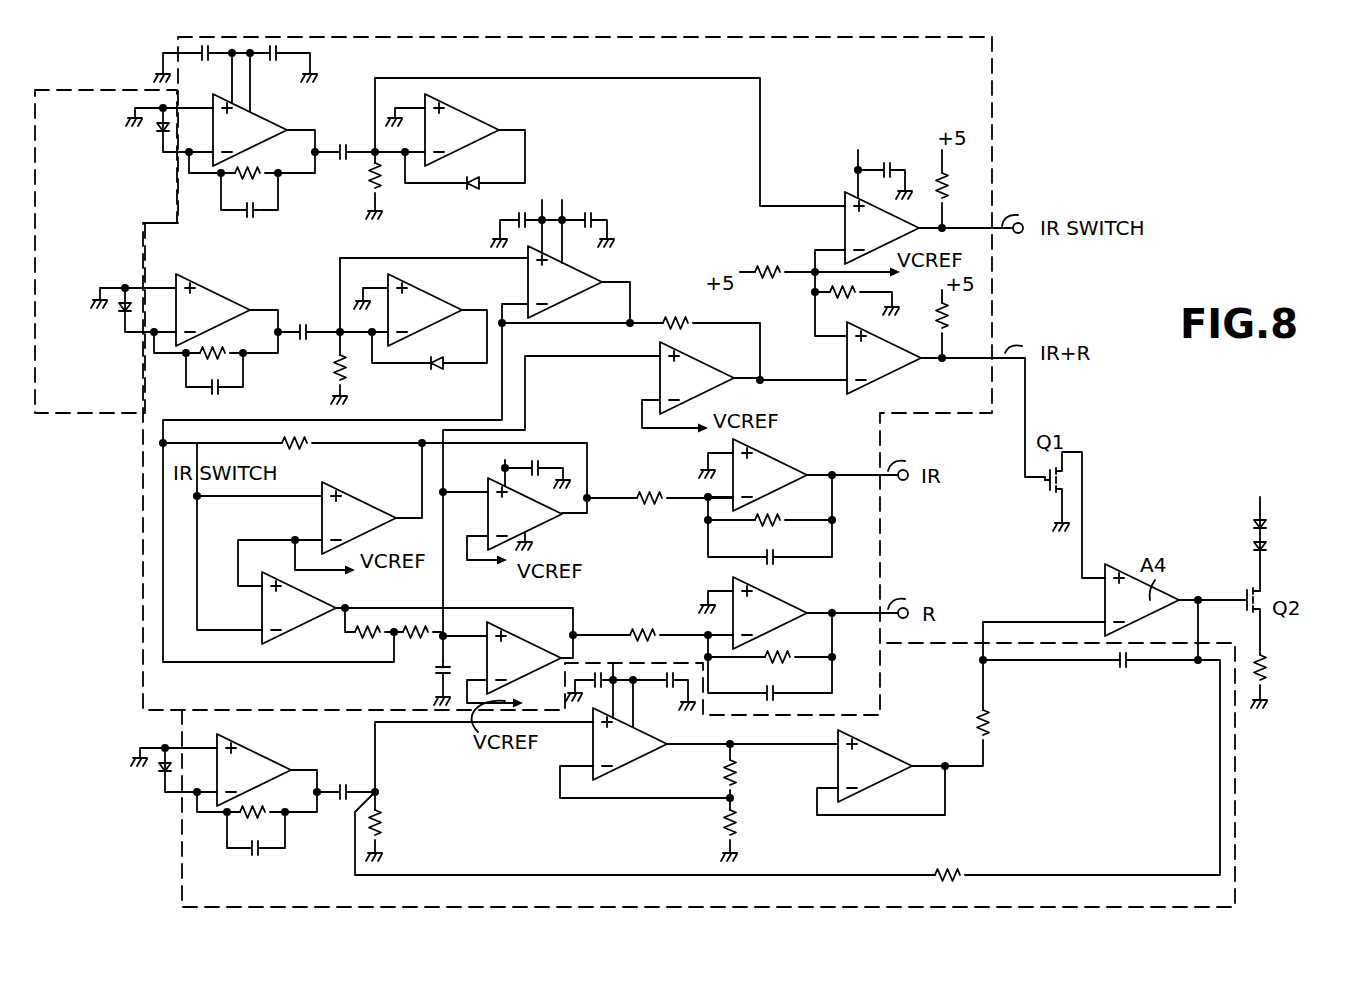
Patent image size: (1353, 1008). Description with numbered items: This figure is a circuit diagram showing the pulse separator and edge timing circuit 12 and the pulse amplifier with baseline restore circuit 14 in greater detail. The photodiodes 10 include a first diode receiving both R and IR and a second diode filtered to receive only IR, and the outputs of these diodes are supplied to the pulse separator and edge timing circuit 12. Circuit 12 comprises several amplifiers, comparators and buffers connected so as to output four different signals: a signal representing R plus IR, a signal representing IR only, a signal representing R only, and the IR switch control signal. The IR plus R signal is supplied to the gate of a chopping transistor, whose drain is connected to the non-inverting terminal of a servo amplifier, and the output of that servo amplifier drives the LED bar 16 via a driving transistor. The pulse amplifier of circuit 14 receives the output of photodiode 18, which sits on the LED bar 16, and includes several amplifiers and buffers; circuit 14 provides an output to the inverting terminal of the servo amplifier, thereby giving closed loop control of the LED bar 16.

The photodiodes 10 is at (87, 60).
The pulse separator and edge timing circuit 12 is at (142, 584).
The pulse amplifier with baseline restore circuit 14 is at (1237, 812).
The LED bar 16 is at (1306, 544).
The photodiode 18 is at (160, 768).